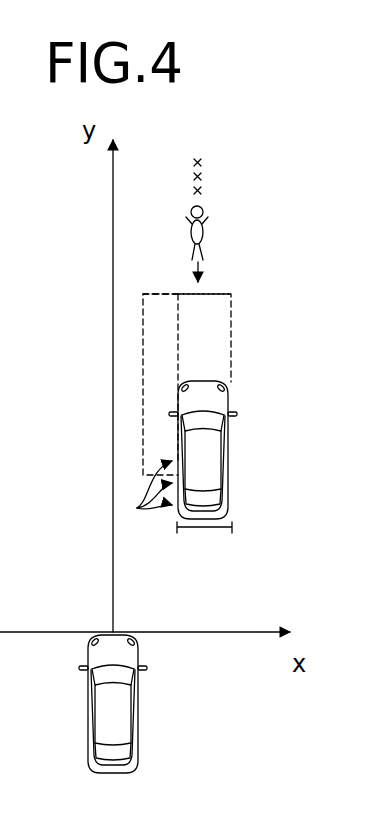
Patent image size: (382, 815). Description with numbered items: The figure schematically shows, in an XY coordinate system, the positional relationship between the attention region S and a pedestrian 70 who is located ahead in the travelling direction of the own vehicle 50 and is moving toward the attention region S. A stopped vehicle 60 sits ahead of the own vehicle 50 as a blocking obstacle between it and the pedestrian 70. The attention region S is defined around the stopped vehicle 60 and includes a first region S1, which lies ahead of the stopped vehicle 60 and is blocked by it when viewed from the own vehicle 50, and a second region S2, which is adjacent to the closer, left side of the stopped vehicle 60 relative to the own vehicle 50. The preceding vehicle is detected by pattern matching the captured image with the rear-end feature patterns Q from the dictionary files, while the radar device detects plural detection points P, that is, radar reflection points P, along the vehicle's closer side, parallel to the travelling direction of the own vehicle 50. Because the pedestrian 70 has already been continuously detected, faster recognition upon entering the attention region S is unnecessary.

The pedestrian 70 is at (206, 211).
The stopped vehicle 60 is at (230, 457).
The own vehicle 50 is at (140, 705).
The attention region S is at (232, 322).
The first region S1 is at (223, 365).
The second region S2 is at (157, 353).
The detection points P is at (146, 492).
The rear-end feature patterns Q is at (204, 532).